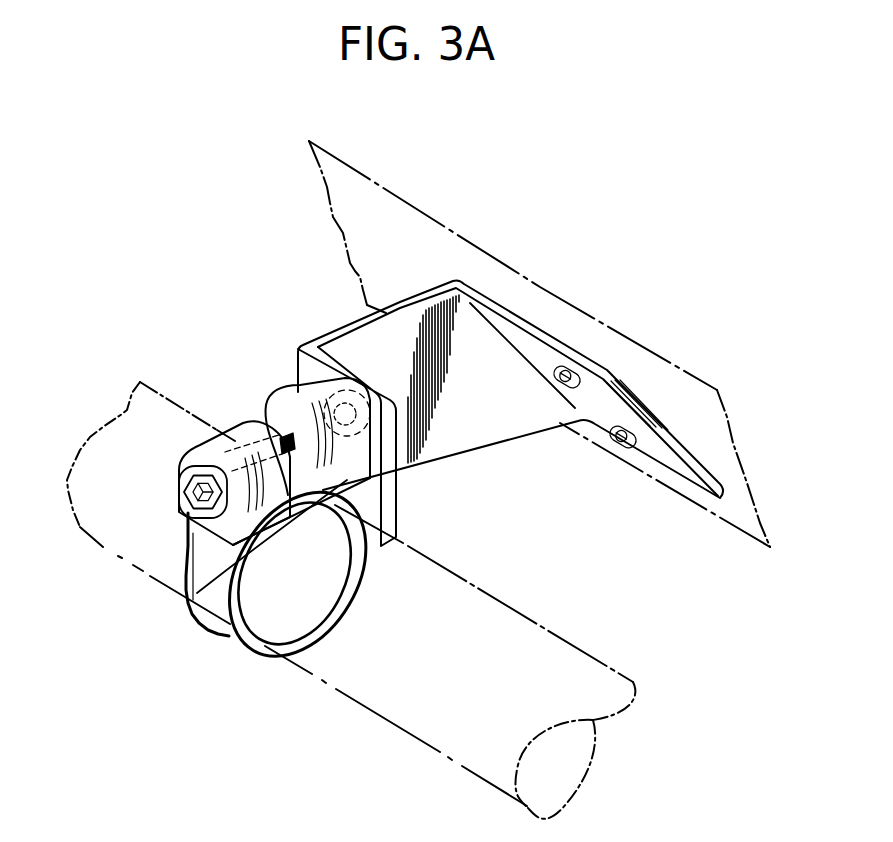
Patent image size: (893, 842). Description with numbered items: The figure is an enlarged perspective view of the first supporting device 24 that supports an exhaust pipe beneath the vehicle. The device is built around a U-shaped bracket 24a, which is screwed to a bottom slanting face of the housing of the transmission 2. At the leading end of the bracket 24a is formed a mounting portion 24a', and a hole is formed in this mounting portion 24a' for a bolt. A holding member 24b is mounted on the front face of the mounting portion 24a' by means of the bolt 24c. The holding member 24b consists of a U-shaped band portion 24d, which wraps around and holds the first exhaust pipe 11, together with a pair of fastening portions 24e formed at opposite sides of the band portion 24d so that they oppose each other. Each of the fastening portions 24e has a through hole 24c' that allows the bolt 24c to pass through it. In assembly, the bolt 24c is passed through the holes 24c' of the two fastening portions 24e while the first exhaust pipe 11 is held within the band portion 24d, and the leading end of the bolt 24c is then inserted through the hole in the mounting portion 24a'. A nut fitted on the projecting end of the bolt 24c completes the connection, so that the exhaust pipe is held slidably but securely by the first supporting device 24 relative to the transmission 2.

The transmission 2 is at (607, 323).
The first exhaust pipe 11 is at (333, 696).
The first supporting device 24 is at (236, 692).
The U-shaped bracket 24a is at (510, 413).
The mounting portion 24a' is at (304, 341).
The holding member 24b is at (112, 660).
The bolt 24c is at (169, 525).
The through hole 24c' is at (281, 403).
The U-shaped band portion 24d is at (193, 533).
The fastening portions 24e is at (197, 593).